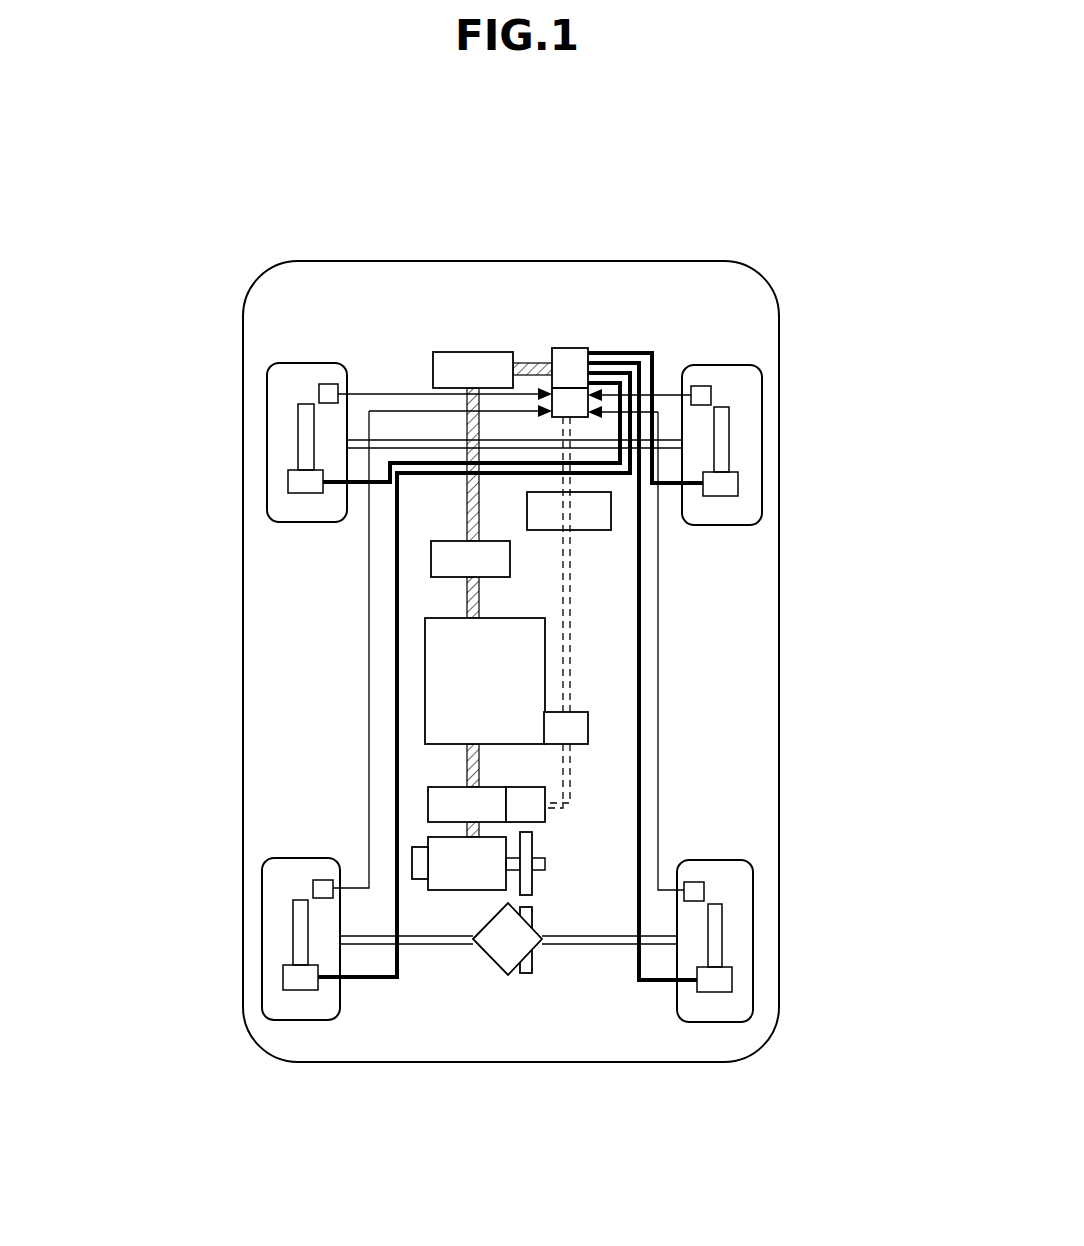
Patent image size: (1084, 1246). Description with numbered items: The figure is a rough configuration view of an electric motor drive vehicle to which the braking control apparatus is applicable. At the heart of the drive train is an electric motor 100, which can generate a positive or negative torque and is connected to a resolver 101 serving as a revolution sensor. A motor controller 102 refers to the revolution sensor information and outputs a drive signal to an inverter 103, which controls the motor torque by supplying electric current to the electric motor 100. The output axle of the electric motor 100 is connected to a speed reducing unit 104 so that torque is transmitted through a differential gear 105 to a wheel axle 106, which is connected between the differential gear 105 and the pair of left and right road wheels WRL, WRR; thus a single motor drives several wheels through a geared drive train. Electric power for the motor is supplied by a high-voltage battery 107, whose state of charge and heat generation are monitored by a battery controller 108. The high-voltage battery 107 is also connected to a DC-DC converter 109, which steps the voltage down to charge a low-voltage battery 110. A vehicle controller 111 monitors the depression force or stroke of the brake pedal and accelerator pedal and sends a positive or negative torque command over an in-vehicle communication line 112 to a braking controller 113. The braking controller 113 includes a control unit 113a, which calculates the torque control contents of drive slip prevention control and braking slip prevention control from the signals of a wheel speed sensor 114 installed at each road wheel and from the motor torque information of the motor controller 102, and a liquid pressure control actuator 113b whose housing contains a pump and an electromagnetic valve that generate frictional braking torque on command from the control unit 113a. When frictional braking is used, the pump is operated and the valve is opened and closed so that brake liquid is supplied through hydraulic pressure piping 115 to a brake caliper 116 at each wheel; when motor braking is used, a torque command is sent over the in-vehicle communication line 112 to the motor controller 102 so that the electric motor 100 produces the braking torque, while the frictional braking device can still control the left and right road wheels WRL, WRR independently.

The electric motor 100 is at (440, 890).
The resolver 101 is at (412, 860).
The motor controller 102 is at (545, 805).
The inverter 103 is at (428, 805).
The speed reducing unit 104 is at (532, 882).
The differential gear 105 is at (493, 977).
The wheel axle 106 is at (455, 947).
The high-voltage battery 107 is at (425, 683).
The battery controller 108 is at (588, 728).
The DC-DC converter 109 is at (431, 552).
The low-voltage battery 110 is at (472, 352).
The vehicle controller 111 is at (585, 530).
The in-vehicle communication line 112 is at (571, 620).
The braking controller 113 is at (587, 301).
The control unit 113a is at (582, 358).
The liquid pressure control actuator 113b is at (566, 385).
The wheel speed sensor 114 is at (319, 392).
The hydraulic pressure piping 115 is at (632, 353).
The brake caliper 116 is at (738, 484).
The rear left road wheel WRL is at (262, 955).
The rear right road wheel WRR is at (753, 955).